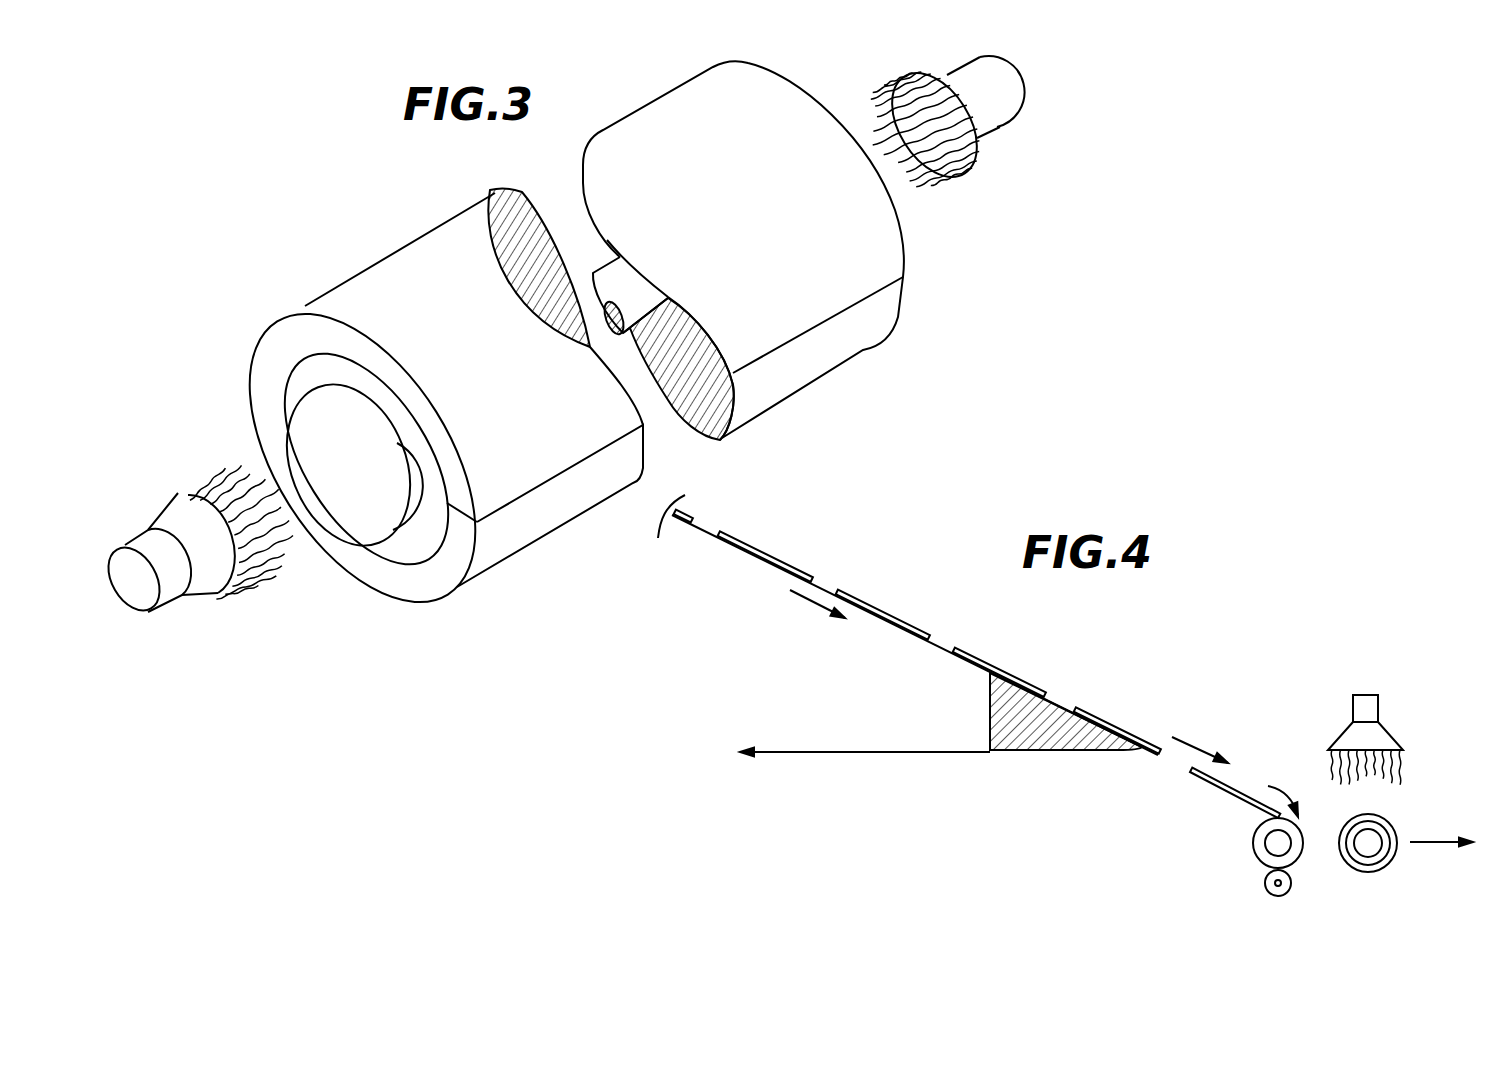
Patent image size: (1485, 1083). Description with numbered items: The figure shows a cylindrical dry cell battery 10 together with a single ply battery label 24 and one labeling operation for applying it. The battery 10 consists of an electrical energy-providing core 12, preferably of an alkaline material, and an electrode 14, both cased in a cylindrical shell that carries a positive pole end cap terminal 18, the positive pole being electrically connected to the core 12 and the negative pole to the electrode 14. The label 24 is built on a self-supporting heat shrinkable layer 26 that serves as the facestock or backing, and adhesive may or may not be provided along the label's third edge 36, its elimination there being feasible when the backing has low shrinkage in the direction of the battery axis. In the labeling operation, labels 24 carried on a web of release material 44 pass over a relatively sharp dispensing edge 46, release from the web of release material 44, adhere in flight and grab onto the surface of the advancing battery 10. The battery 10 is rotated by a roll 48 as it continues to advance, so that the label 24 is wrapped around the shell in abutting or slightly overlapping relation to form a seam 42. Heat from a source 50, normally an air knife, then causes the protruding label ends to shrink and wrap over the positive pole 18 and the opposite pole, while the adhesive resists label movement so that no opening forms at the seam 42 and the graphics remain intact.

In FIG. 3, the cylindrical dry cell battery 10 is at (397, 510).
In FIG. 4, the cylindrical dry cell battery 10 is at (1272, 845).
In FIG. 3, the electrical energy-providing core 12 is at (692, 398).
In FIG. 3, the electrode 14 is at (612, 272).
In FIG. 3, the positive pole end cap terminal 18 is at (397, 443).
In FIG. 3, the single ply battery label 24 is at (821, 366).
In FIG. 4, the single ply battery label 24 is at (765, 555).
In FIG. 3, the heat shrinkable layer 26 is at (385, 263).
In FIG. 3, the third edge 36 is at (296, 368).
In FIG. 3, the seam 42 is at (503, 505).
In FIG. 4, the web of release material 44 is at (700, 533).
In FIG. 4, the dispensing edge 46 is at (1057, 720).
In FIG. 4, the roll 48 is at (1268, 888).
In FIG. 3, the heat source 50 is at (173, 585).
In FIG. 4, the heat source 50 is at (1370, 700).